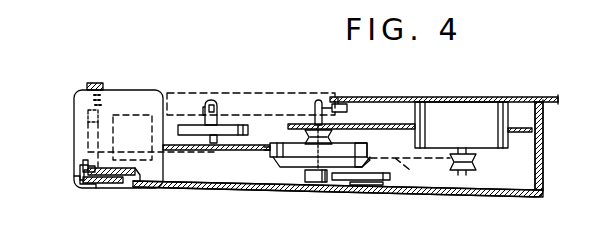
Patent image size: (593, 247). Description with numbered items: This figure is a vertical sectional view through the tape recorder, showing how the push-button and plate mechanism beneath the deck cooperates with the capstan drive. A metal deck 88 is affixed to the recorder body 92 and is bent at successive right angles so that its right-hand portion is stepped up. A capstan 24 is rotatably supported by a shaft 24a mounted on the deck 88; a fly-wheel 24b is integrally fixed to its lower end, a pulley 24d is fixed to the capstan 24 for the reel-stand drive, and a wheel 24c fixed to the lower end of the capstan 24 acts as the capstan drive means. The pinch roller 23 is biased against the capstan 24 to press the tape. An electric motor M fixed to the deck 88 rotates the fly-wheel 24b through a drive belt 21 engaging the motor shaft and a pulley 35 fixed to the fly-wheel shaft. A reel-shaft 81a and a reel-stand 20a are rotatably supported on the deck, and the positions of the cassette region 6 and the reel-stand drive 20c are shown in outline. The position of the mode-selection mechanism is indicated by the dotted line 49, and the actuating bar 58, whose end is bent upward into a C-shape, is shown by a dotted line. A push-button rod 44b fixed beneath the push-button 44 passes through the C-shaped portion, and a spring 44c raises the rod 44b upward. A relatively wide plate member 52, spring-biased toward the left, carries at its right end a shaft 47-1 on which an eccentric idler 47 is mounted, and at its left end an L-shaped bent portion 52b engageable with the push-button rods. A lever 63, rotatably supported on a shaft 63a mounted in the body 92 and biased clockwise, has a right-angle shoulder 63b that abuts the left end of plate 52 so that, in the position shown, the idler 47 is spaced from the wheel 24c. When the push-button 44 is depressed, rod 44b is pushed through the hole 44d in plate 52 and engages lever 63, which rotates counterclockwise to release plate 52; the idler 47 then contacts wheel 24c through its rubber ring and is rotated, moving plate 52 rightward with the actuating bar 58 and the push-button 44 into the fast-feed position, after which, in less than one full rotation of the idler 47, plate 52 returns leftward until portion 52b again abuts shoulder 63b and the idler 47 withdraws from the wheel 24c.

The push-button 44 is at (92, 83).
The push-button rod 44b is at (85, 114).
The spring 44c is at (103, 100).
The hole 44d is at (95, 183).
The dotted line indicating mode-selection mechanism 49 is at (140, 113).
The actuating bar 58 is at (90, 128).
The plate member 52 is at (152, 188).
The L-shaped bent portion 52b is at (86, 160).
The lever 63 is at (100, 182).
The shaft 63a is at (125, 181).
The right-angle shoulder portion 63b is at (80, 173).
The reel-shaft 81a is at (212, 100).
The reel-stand 20a is at (232, 125).
The shaft 20c is at (210, 152).
The cassette outline 6 is at (270, 93).
The shaft 24a is at (316, 100).
The capstan 24 is at (330, 100).
The pinch roller 23 is at (345, 104).
The pulley 24d is at (335, 115).
The metal deck 88 is at (353, 124).
The fly-wheel 24b is at (370, 148).
The wheel 24c is at (308, 178).
The shaft 47-1 is at (343, 192).
The eccentric idler 47 is at (382, 192).
The electric motor M is at (478, 105).
The drive belt 21 is at (410, 173).
The pulley 35 is at (478, 165).
The recorder body 92 is at (426, 192).